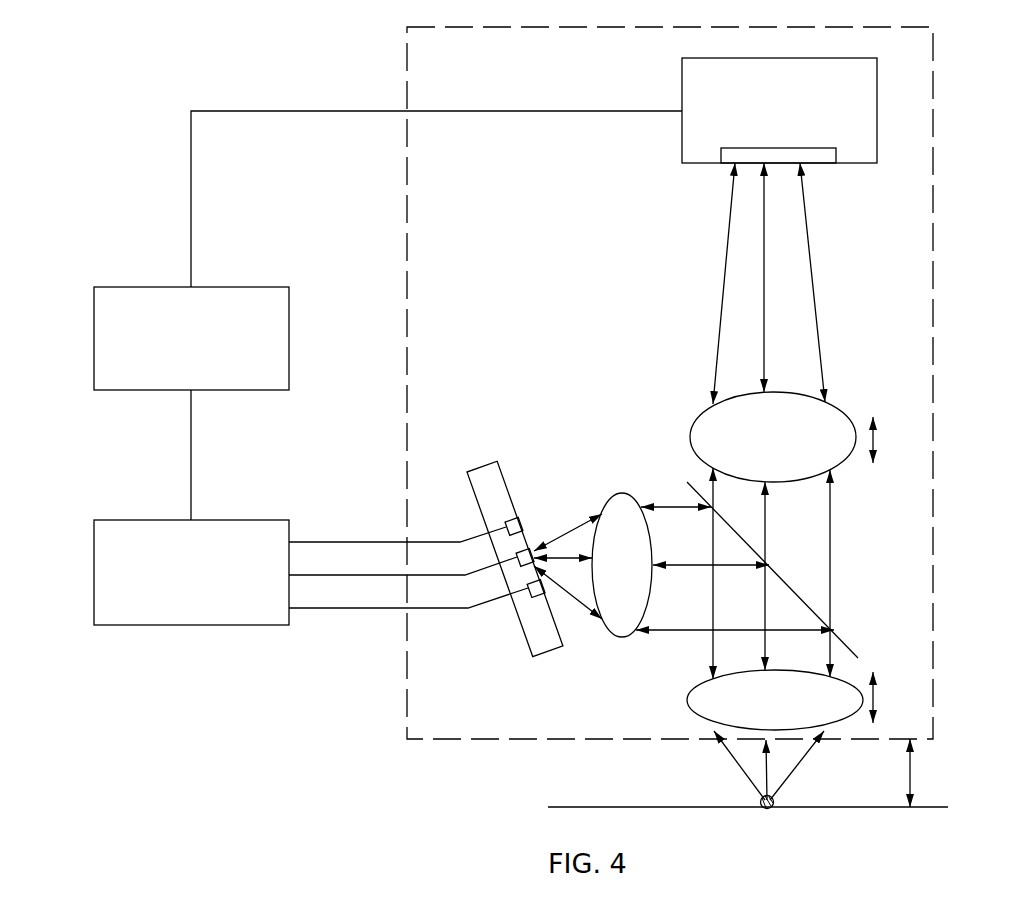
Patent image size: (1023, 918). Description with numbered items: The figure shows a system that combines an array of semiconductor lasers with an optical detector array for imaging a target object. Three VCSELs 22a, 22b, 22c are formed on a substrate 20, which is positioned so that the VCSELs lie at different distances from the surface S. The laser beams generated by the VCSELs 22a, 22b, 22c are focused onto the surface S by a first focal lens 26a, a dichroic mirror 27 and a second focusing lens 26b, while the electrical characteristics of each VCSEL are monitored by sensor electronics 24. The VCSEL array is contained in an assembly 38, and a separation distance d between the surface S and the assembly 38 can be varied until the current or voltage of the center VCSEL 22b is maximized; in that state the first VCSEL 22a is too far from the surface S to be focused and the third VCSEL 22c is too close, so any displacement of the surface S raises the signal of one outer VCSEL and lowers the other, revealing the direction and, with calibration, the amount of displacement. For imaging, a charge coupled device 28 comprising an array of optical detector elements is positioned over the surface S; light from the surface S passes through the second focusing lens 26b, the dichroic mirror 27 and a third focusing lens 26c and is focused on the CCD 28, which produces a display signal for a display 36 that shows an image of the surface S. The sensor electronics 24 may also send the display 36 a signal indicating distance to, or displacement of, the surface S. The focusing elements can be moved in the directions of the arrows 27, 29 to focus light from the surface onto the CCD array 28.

The substrate 20 is at (482, 463).
The first VCSEL 22a is at (520, 517).
The center VCSEL 22b is at (533, 548).
The third VCSEL 22c is at (542, 597).
The sensor electronics 24 is at (180, 608).
The first focal lens 26a is at (625, 523).
The second focusing lens 26b is at (718, 698).
The third focusing lens 26c is at (837, 433).
The dichroic mirror 27 is at (847, 642).
The charge coupled device (CCD) 28 is at (695, 103).
The arrow 29 is at (877, 442).
The display 36 is at (117, 322).
The assembly 38 is at (408, 63).
The surface S is at (571, 806).
The separation distance d is at (927, 773).